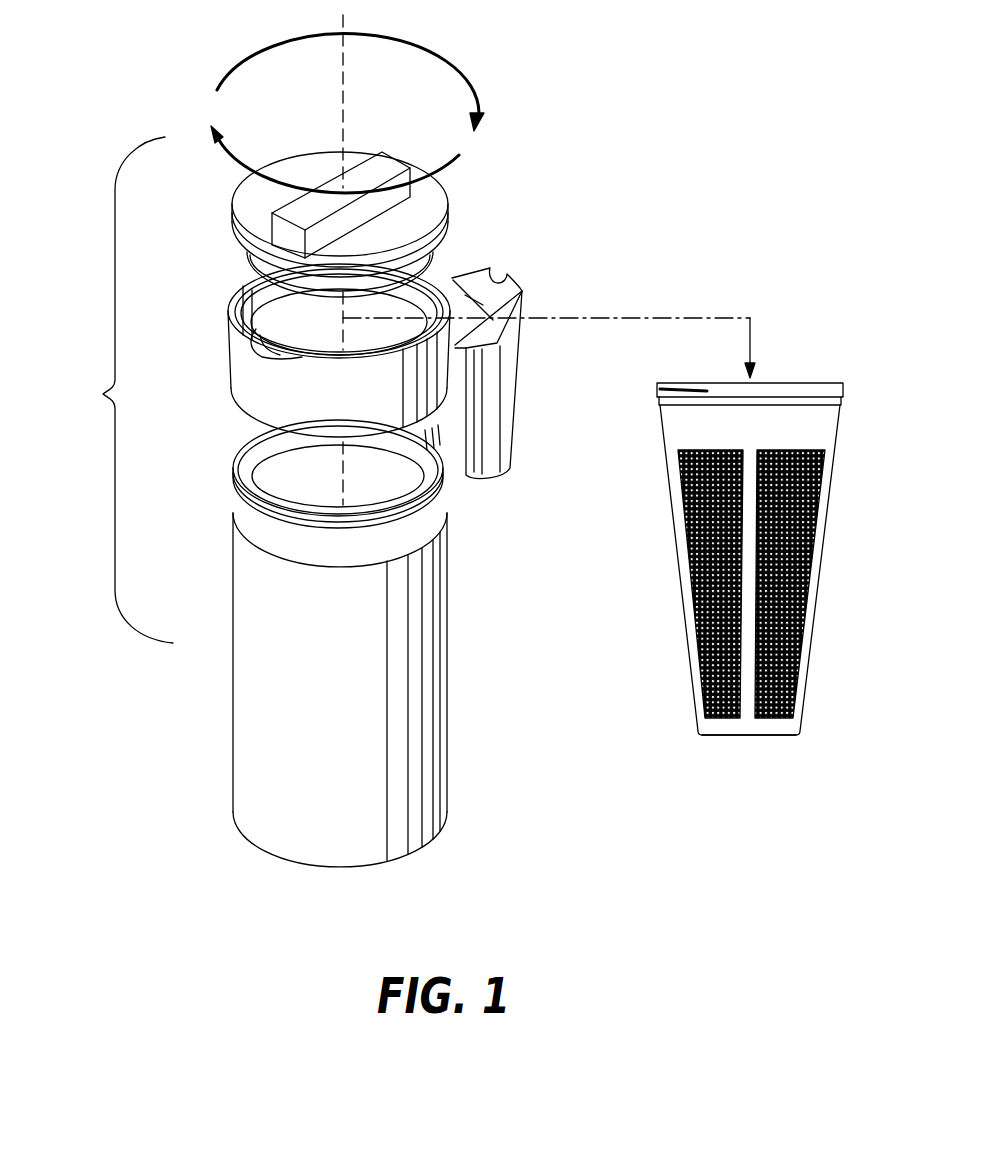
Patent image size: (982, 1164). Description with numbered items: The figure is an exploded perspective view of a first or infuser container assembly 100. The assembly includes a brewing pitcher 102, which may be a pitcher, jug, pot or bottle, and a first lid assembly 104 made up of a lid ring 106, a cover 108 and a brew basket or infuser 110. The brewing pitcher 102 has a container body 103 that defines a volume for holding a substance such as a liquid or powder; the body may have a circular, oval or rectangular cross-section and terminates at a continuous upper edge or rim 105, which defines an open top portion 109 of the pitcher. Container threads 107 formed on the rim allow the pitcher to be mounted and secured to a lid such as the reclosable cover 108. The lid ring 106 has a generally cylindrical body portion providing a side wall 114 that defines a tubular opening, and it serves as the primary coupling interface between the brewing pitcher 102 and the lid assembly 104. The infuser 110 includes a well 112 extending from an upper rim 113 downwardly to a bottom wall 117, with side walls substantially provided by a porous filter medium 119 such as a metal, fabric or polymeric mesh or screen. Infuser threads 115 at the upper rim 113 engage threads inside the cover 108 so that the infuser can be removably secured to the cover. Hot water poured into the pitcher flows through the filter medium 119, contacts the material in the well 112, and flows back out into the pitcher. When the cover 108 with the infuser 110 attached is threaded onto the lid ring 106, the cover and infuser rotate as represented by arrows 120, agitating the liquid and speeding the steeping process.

The infuser container assembly 100 is at (588, 128).
The brewing pitcher 102 is at (392, 690).
The container body 103 is at (445, 728).
The first lid assembly 104 is at (116, 390).
The rim 105 is at (448, 483).
The lid ring 106 is at (377, 329).
The container threads 107 is at (308, 471).
The cover 108 is at (448, 214).
The open top portion 109 is at (298, 473).
The infuser 110 is at (741, 564).
The well 112 is at (741, 584).
The upper rim 113 is at (725, 368).
The side wall 114 is at (357, 405).
The infuser threads 115 is at (660, 388).
The bottom wall 117 is at (750, 735).
The porous filter medium 119 is at (812, 560).
The arrows 120 is at (440, 54).